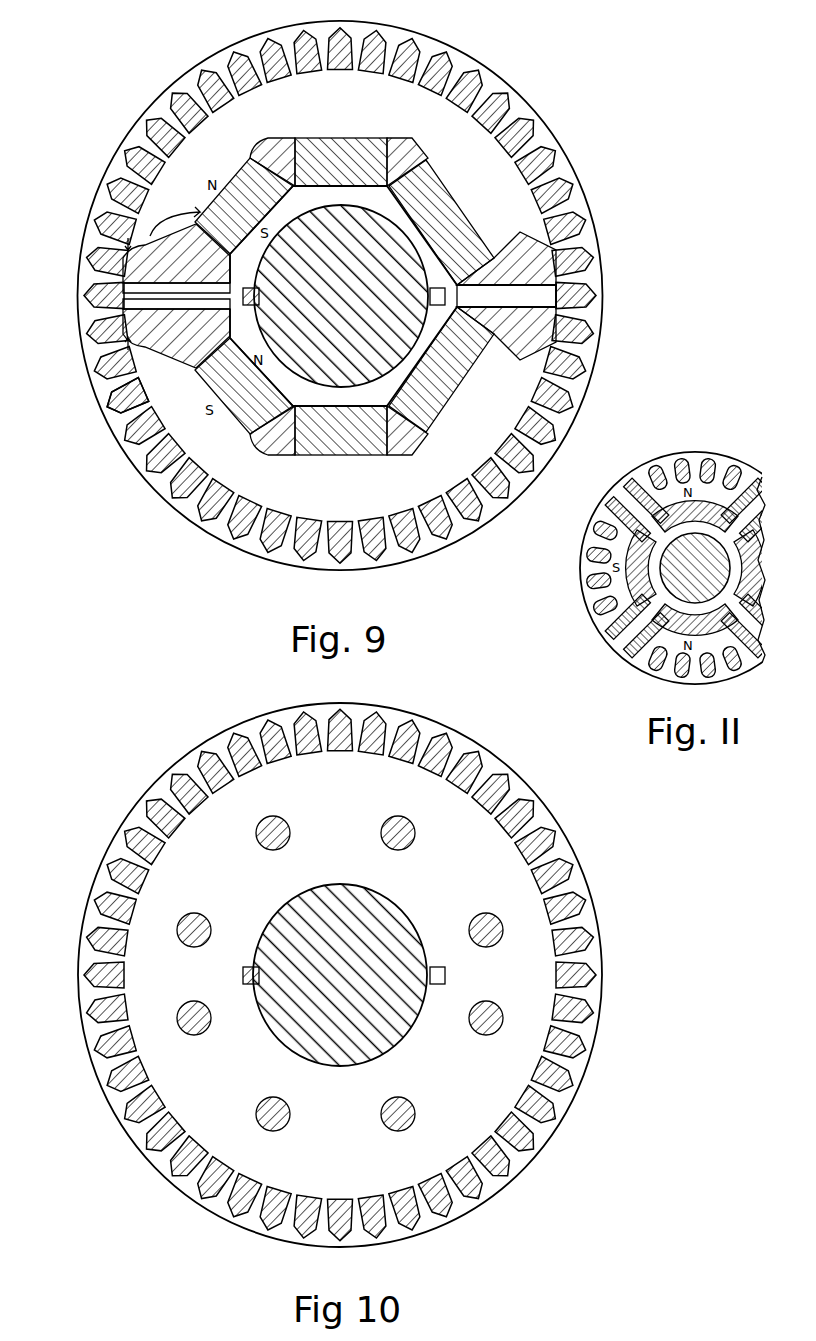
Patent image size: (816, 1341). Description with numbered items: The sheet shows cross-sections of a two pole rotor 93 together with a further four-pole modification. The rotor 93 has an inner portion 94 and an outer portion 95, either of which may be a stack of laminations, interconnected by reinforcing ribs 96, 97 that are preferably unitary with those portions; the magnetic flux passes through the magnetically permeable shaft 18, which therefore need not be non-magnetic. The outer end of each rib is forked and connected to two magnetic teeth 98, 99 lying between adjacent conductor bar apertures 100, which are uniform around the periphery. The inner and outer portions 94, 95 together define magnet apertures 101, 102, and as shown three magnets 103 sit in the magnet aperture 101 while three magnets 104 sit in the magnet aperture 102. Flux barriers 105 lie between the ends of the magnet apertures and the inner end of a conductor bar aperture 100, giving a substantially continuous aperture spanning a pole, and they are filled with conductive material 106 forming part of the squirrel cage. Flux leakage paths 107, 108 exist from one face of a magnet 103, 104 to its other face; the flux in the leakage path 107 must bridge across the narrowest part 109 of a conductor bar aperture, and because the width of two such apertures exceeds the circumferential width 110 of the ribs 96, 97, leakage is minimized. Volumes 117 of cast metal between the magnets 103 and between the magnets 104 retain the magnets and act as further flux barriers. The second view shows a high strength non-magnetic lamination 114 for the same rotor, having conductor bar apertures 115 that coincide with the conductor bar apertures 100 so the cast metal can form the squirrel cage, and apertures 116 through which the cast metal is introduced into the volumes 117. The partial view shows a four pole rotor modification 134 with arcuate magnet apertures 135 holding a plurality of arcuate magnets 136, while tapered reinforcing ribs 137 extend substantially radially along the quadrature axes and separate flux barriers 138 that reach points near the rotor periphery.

In FIG. 9, the magnetically permeable shaft 18 is at (391, 308).
In FIG. 10, the magnetically permeable shaft 18 is at (373, 983).
In FIG. 9, the two pole rotor 93 is at (517, 81).
In FIG. 9, the inner portion 94 is at (314, 209).
In FIG. 9, the outer portion 95 is at (380, 108).
In FIG. 9, the reinforcing rib 96 is at (178, 292).
In FIG. 9, the reinforcing rib 97 is at (483, 292).
In FIG. 9, the tooth 98 is at (126, 286).
In FIG. 9, the tooth 99 is at (126, 302).
In FIG. 9, the conductor bar aperture 100 is at (113, 400).
In FIG. 9, the magnet aperture 101 is at (256, 160).
In FIG. 9, the magnet aperture 102 is at (330, 442).
In FIG. 9, the magnet 103 is at (333, 142).
In FIG. 9, the magnet 104 is at (262, 432).
In FIG. 9, the flux barrier 105 is at (212, 390).
In FIG. 9, the conductive material 106 is at (522, 257).
In FIG. 9, the flux leakage path 107 is at (171, 216).
In FIG. 9, the flux leakage path 108 is at (181, 352).
In FIG. 9, the narrowest part of conductor bar aperture 109 is at (124, 248).
In FIG. 9, the circumferential width of the ribs 110 is at (124, 328).
In FIG. 9, the volume of cast metal 117 is at (430, 126).
In FIG. 10, the non-magnetic lamination 114 is at (492, 772).
In FIG. 10, the conductor bar aperture 115 is at (528, 806).
In FIG. 10, the aperture 116 is at (392, 824).
In FIG. 11, the stator 134 is at (592, 537).
In FIG. 11, the arcuate magnet aperture 135 is at (708, 506).
In FIG. 11, the arcuate magnet 136 is at (676, 500).
In FIG. 11, the tapered reinforcing rib 137 is at (622, 494).
In FIG. 11, the flux barrier 138 is at (634, 482).